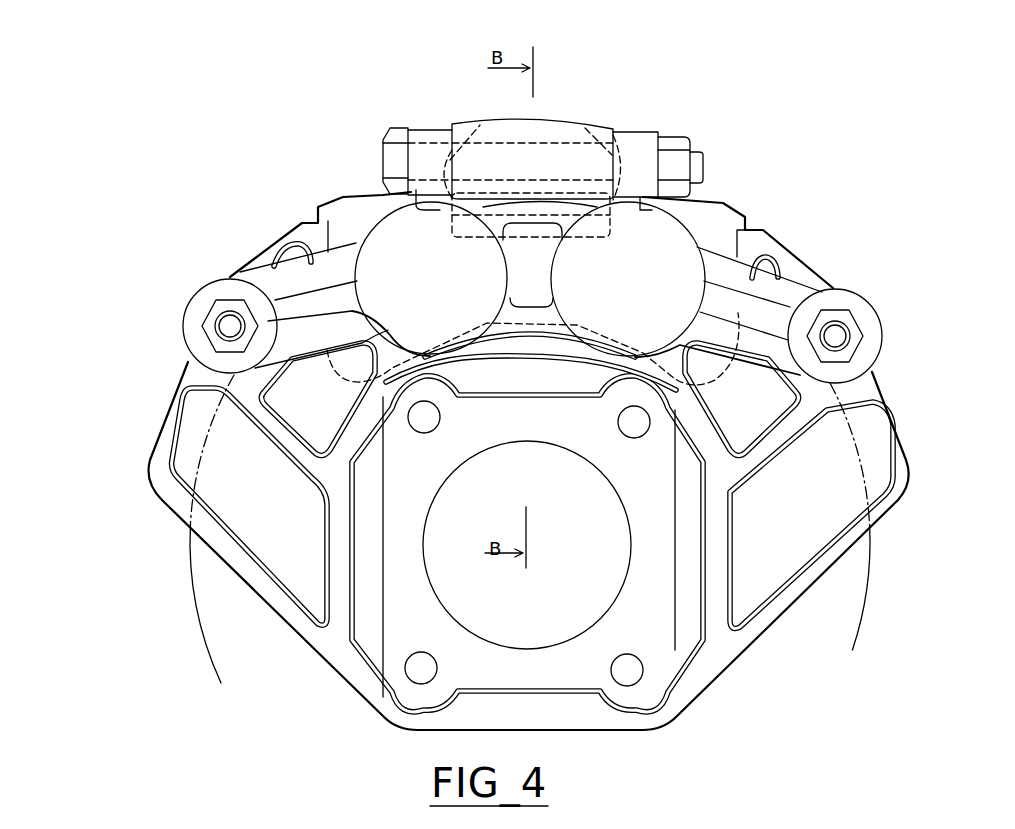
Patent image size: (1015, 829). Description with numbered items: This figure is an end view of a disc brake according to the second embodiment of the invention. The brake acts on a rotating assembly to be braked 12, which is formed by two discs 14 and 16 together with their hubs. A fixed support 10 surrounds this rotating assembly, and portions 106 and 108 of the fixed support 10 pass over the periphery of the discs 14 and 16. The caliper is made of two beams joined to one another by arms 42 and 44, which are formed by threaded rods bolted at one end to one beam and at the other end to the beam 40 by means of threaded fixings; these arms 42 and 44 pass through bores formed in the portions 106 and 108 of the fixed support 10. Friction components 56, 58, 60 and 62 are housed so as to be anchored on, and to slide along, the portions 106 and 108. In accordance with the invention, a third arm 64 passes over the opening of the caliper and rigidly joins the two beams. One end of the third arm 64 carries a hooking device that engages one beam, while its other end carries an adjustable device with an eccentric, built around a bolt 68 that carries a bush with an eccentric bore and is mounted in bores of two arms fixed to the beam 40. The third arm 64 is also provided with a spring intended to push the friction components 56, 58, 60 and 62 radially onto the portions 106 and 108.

The fixed support 10 is at (903, 443).
The rotating assembly to be braked 12 is at (465, 604).
The disc 14 is at (465, 604).
The disc 16 is at (197, 657).
The beam 40 is at (653, 252).
The arm 42 is at (228, 330).
The arm 44 is at (837, 336).
The friction component 56 is at (618, 255).
The friction component 58 is at (618, 255).
The friction component 60 is at (618, 255).
The friction component 62 is at (725, 202).
The third arm 64 is at (545, 113).
The bolt 68 is at (393, 162).
The portion of the fixed support 106 is at (208, 436).
The portion of the fixed support 108 is at (848, 420).